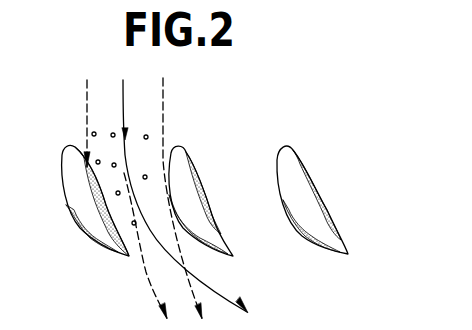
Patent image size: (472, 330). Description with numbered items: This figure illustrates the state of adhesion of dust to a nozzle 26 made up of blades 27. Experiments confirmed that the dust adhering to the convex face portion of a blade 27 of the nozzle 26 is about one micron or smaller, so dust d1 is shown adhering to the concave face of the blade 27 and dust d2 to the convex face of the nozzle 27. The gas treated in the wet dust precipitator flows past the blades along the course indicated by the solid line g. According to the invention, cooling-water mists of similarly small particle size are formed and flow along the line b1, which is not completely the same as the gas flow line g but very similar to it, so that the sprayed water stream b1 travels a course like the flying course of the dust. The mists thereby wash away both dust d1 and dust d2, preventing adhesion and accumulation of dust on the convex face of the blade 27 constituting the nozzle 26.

The nozzle 26 is at (102, 147).
The blade 27 is at (180, 145).
The dust adhering to the concave face of the blade d1 is at (204, 189).
The dust adhering to the convex face of the nozzle d2 is at (192, 235).
The sprayed water stream of mists b1 is at (141, 268).
The gas flow line g is at (205, 282).